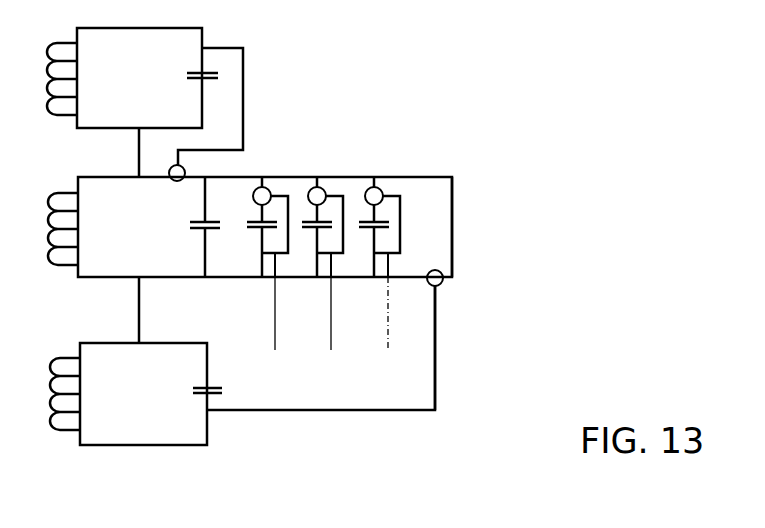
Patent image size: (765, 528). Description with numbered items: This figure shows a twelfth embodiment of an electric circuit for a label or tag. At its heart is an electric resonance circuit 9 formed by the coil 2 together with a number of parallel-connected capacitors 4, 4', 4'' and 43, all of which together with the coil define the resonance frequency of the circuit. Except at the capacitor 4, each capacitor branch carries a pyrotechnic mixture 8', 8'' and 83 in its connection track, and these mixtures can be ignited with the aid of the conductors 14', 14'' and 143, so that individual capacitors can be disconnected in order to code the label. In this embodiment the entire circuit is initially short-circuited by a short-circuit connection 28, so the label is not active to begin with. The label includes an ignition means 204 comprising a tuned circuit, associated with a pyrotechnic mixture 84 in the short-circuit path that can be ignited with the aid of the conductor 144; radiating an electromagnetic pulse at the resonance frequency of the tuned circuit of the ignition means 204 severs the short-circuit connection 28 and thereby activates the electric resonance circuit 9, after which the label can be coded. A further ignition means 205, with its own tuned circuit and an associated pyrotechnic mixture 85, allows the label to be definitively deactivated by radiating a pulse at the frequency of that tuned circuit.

The ignition means 205 is at (145, 102).
The ignition means 204 is at (242, 361).
The electric resonance circuit 9 is at (164, 247).
The coil 2 is at (82, 228).
The pyrotechnic mixture 85 is at (170, 182).
The capacitor 4 is at (196, 253).
The pyrotechnic mixture 8' is at (273, 187).
The capacitor 4' is at (250, 276).
The conductor 14' is at (277, 317).
The pyrotechnic mixture 8'' is at (331, 187).
The capacitor 4'' is at (306, 276).
The conductor 14'' is at (331, 317).
The pyrotechnic mixture 83 is at (378, 187).
The capacitor 43 is at (363, 237).
The conductor 143 is at (392, 317).
The pyrotechnic mixture 84 is at (443, 283).
The conductor 144 is at (438, 335).
The short-circuit connection 28 is at (452, 213).